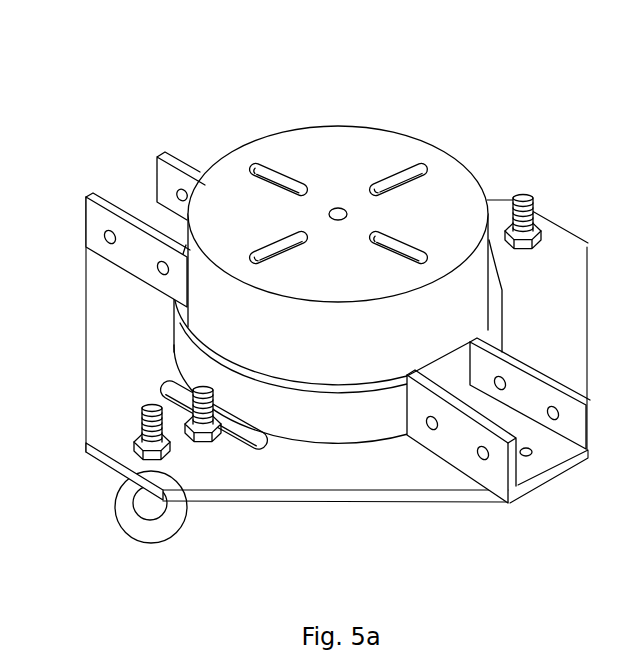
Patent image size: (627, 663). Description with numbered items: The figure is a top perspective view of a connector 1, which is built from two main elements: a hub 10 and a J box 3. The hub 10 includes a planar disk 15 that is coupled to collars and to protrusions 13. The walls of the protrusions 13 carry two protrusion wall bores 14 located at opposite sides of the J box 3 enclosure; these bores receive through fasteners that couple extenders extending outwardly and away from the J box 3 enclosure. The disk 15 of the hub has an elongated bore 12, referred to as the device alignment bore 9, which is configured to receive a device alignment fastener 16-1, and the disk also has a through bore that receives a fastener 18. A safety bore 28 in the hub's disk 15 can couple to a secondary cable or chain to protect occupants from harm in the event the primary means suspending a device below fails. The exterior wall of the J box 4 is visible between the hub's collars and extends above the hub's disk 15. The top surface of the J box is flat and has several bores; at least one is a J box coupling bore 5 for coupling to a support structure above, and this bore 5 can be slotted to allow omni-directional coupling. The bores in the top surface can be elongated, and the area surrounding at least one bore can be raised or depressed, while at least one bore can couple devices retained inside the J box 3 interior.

The connector 1 is at (165, 79).
The J box 3 is at (376, 341).
The exterior wall of the J box 4 is at (486, 292).
The J box coupling bore 5 is at (397, 187).
The device alignment bore 9 is at (213, 464).
The hub 10 is at (337, 383).
The elongated bore 12 is at (238, 438).
The protrusions 13 is at (336, 333).
The protrusion wall bores 14 is at (181, 189).
The planar disk 15 is at (335, 491).
The device alignment fastener 16-1 is at (522, 196).
The fastener 18 is at (115, 503).
The safety bore 28 is at (530, 456).